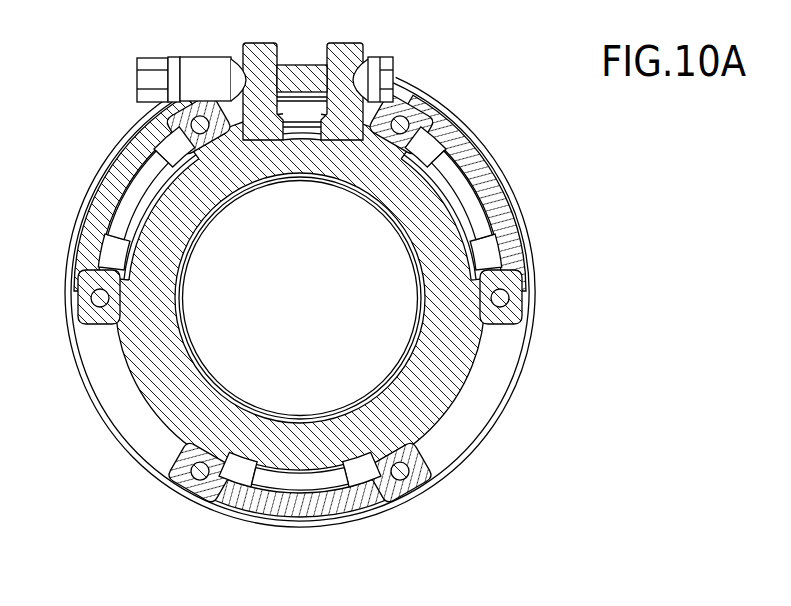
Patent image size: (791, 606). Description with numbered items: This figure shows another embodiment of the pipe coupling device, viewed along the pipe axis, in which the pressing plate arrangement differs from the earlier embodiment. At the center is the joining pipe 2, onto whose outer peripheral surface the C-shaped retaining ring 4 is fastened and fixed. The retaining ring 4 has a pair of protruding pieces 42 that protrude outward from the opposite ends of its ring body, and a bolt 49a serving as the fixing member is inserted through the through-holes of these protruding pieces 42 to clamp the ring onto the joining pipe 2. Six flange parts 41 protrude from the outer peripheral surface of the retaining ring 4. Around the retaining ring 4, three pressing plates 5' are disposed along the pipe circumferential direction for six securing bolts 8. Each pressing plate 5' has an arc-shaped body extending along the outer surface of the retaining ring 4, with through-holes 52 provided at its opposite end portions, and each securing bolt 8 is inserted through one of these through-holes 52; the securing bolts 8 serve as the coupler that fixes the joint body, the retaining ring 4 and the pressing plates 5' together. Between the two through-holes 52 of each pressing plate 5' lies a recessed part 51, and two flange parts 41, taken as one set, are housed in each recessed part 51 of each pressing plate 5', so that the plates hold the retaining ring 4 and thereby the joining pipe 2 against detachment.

The joining pipe 2 is at (338, 318).
The retaining ring 4 is at (300, 302).
The pressing plate 5' is at (310, 313).
The securing bolt 8 is at (294, 278).
The flange part 41 is at (277, 349).
The protruding piece 42 is at (304, 85).
The bolt 49a is at (302, 61).
The recessed part 51 is at (295, 355).
The through-hole 52 is at (299, 341).